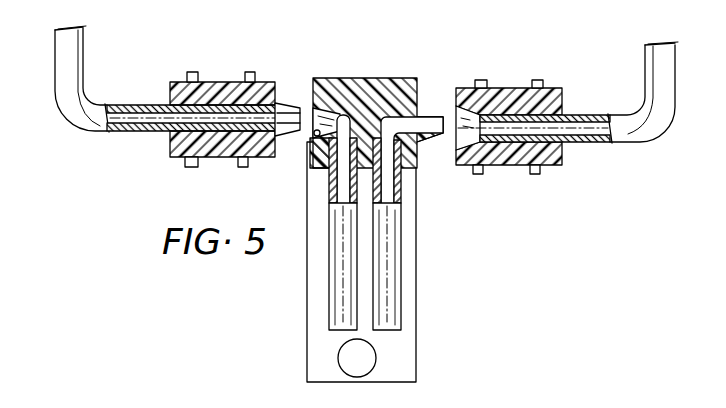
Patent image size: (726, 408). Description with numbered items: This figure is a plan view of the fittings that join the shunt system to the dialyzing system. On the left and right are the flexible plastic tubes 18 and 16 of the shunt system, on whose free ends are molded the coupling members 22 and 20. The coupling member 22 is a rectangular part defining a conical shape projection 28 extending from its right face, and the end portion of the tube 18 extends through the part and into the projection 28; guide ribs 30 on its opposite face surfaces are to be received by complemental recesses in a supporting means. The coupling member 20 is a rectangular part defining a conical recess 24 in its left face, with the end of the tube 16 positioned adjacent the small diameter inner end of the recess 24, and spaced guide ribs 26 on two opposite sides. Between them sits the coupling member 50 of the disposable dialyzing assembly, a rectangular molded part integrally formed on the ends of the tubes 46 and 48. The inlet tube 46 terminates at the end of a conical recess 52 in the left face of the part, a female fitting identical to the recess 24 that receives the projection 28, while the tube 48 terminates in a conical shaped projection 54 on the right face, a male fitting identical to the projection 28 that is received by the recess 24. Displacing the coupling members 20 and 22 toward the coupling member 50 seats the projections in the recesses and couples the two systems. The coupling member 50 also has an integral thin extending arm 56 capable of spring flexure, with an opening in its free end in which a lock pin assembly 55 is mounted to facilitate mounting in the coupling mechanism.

The tube 16 is at (677, 65).
The tube 18 is at (85, 48).
The coupling member 20 is at (521, 88).
The coupling member 22 is at (218, 82).
The conical recess 24 is at (454, 140).
The guide ribs 26 is at (482, 80).
The conical shape projection 28 is at (284, 104).
The guide ribs 30 is at (192, 72).
The inlet tube 46 is at (338, 284).
The tube 48 is at (391, 279).
The coupling member 50 is at (312, 160).
The conical recess 52 is at (313, 134).
The conical shaped projection 54 is at (428, 115).
The lock pin assembly 55 is at (368, 352).
The arm 56 is at (408, 258).